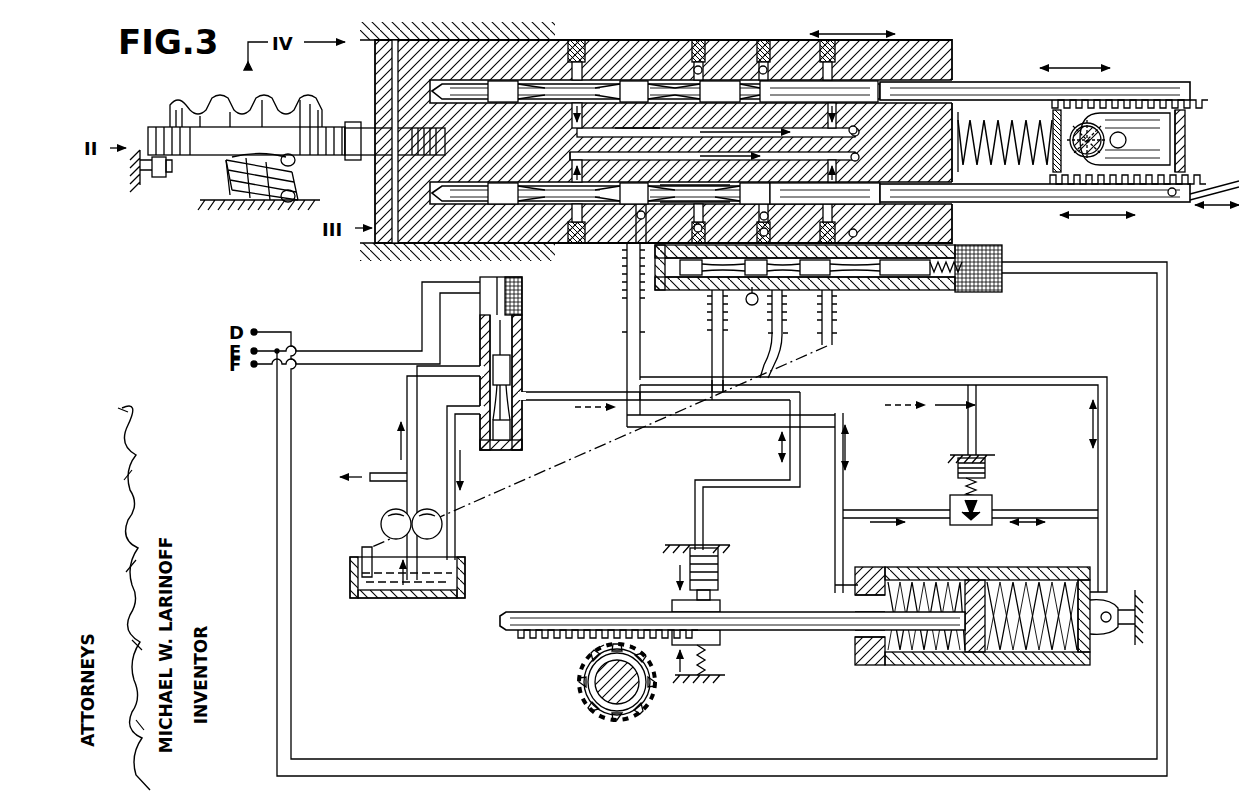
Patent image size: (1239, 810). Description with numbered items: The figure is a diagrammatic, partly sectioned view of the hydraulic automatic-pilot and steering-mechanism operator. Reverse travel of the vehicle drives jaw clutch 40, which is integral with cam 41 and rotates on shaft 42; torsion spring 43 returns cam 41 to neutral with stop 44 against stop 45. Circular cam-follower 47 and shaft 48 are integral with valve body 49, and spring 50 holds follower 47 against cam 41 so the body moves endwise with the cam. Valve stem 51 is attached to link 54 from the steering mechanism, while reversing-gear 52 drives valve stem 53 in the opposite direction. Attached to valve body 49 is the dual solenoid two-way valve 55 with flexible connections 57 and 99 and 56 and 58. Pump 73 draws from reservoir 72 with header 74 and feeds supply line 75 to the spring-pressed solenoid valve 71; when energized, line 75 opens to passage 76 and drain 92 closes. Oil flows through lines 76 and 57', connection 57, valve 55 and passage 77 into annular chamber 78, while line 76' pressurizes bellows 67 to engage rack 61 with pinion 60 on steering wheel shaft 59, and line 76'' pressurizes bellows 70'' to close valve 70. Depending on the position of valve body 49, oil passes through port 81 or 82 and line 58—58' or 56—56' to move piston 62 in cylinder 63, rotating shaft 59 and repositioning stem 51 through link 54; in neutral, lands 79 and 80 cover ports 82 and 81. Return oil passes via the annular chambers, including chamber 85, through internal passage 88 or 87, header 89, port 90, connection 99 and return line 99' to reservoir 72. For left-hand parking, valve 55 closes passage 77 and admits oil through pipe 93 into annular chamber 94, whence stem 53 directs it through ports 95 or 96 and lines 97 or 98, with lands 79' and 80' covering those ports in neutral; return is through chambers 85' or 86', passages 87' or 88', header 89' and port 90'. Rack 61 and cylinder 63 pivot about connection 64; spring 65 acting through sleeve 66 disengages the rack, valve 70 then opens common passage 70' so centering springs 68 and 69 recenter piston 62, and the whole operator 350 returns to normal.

The jaw clutch 40 is at (180, 106).
The cam 41 is at (152, 135).
The shaft 42 is at (258, 185).
The torsion spring 43 is at (240, 200).
The stop 44 is at (162, 174).
The stop 45 is at (146, 168).
The circular cam-follower 47 is at (372, 148).
The shaft 48 is at (395, 97).
The valve body 49 is at (375, 68).
The spring 50 is at (1000, 120).
The valve stem 51 is at (1068, 202).
The reversing-gear 52 is at (1175, 110).
The valve stem 53 is at (1145, 82).
The link 54 is at (1222, 183).
The solenoid operated valve 55 is at (915, 290).
The flexible oil-piping connection 56 is at (619, 335).
The oil line 56' is at (711, 408).
The flexible oil-piping connection 57 is at (703, 341).
The oil line 57' is at (699, 379).
The flexible oil-piping connection 58 is at (767, 334).
The oil line 58' is at (873, 467).
The steering wheel shaft 59 is at (600, 694).
The driving pinion 60 is at (652, 698).
The rack 61 is at (632, 612).
The piston 62 is at (973, 652).
The cylinder 63 is at (1032, 652).
The connection 64 is at (1106, 622).
The spring 65 is at (708, 672).
The sleeve 66 is at (840, 200).
The hydraulic bellows 67 is at (718, 576).
The spring 68 is at (930, 580).
The spring 69 is at (1050, 580).
The valve 70 is at (1002, 503).
The common oil passage 70' is at (970, 508).
The bellows 70'' is at (996, 475).
The solenoid-operated two-way valve 71 is at (522, 345).
The oil reservoir 72 is at (405, 597).
The oil pump 73 is at (381, 524).
The oil-line header 74 is at (357, 478).
The oil supply line 75 is at (478, 372).
The oil passage 76 is at (661, 407).
The oil line 76' is at (747, 471).
The oil line 76'' is at (996, 420).
The oil passage 77 is at (704, 224).
The annular chamber 78 is at (695, 182).
The valve stem land 79 is at (581, 183).
The valve stem land 79' is at (746, 78).
The valve stem land 80 is at (742, 183).
The valve stem land 80' is at (581, 62).
The port 81 is at (757, 228).
The port 82 is at (634, 214).
The annular chamber 85 is at (656, 205).
The annular return chamber 85' is at (819, 78).
The annular return chamber 86' is at (656, 76).
The internal passage 87 is at (559, 167).
The internal return passage 87' is at (814, 115).
The internal passage 88 is at (805, 172).
The internal return passage 88' is at (559, 118).
The header 89 is at (679, 146).
The header 89' is at (630, 125).
The port 90 is at (808, 227).
The port 90' is at (857, 184).
The drain 92 is at (462, 410).
The passage 93 is at (698, 62).
The annular chamber 94 is at (740, 82).
The port 95 is at (635, 62).
The port 96 is at (766, 60).
The oil line 97 is at (712, 147).
The oil line 98 is at (716, 122).
The flexible oil-piping connection 99 is at (839, 317).
The return line 99' is at (591, 458).
The actuator cylinder 350 is at (912, 672).